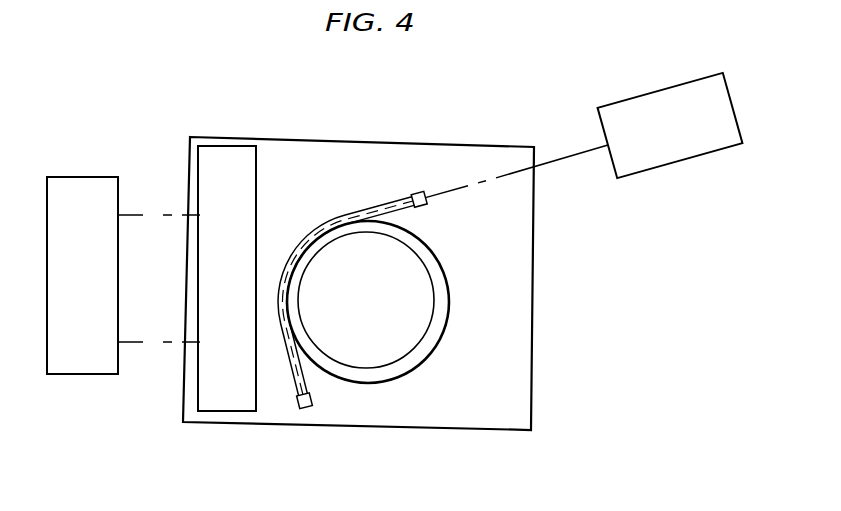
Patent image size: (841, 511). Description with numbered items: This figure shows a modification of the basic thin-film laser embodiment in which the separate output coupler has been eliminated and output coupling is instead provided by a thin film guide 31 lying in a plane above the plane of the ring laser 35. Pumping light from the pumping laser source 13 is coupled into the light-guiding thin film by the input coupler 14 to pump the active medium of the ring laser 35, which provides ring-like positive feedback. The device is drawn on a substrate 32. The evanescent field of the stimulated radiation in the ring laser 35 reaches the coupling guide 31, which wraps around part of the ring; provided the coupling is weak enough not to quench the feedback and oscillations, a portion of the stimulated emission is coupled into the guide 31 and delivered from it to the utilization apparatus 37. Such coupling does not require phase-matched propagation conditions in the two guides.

The pumping laser source 13 is at (80, 374).
The input coupler 14 is at (213, 411).
The thin film guide 31 is at (314, 443).
The substrate 32 is at (532, 416).
The ring laser 35 is at (445, 327).
The utilization apparatus 37 is at (673, 165).